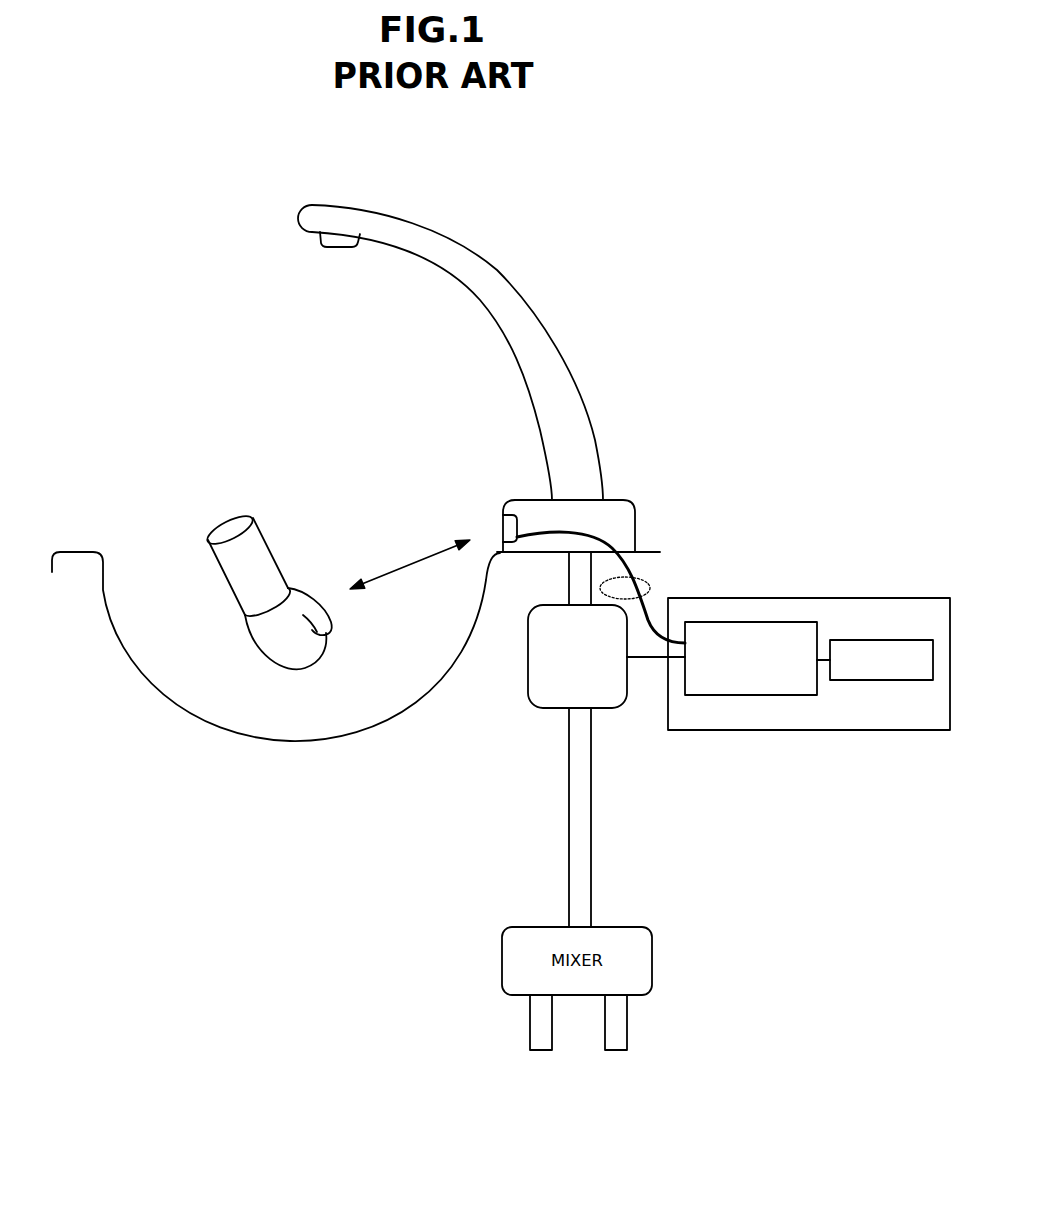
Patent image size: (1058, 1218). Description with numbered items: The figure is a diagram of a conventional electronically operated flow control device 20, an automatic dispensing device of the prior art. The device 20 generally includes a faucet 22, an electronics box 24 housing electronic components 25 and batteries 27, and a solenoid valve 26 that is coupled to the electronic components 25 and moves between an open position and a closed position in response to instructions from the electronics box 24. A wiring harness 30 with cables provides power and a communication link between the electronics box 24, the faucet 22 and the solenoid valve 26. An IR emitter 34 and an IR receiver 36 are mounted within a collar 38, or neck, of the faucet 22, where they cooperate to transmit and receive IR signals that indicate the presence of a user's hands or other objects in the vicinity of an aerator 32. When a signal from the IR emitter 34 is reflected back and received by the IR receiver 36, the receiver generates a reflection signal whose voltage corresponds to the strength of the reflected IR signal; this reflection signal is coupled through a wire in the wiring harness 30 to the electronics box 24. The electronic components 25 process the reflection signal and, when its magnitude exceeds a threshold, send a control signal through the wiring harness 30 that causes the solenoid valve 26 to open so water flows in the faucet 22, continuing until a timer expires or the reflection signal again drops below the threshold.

The electronically operated flow control device 20 is at (640, 292).
The faucet 22 is at (530, 282).
The aerator 32 is at (342, 255).
The collar 38 is at (618, 498).
The IR emitter 34 is at (498, 527).
The IR receiver 36 is at (510, 528).
The wiring harness 30 is at (652, 588).
The solenoid valve 26 is at (547, 710).
The electronics box 24 is at (817, 731).
The electronic components 25 is at (740, 620).
The batteries 27 is at (857, 640).